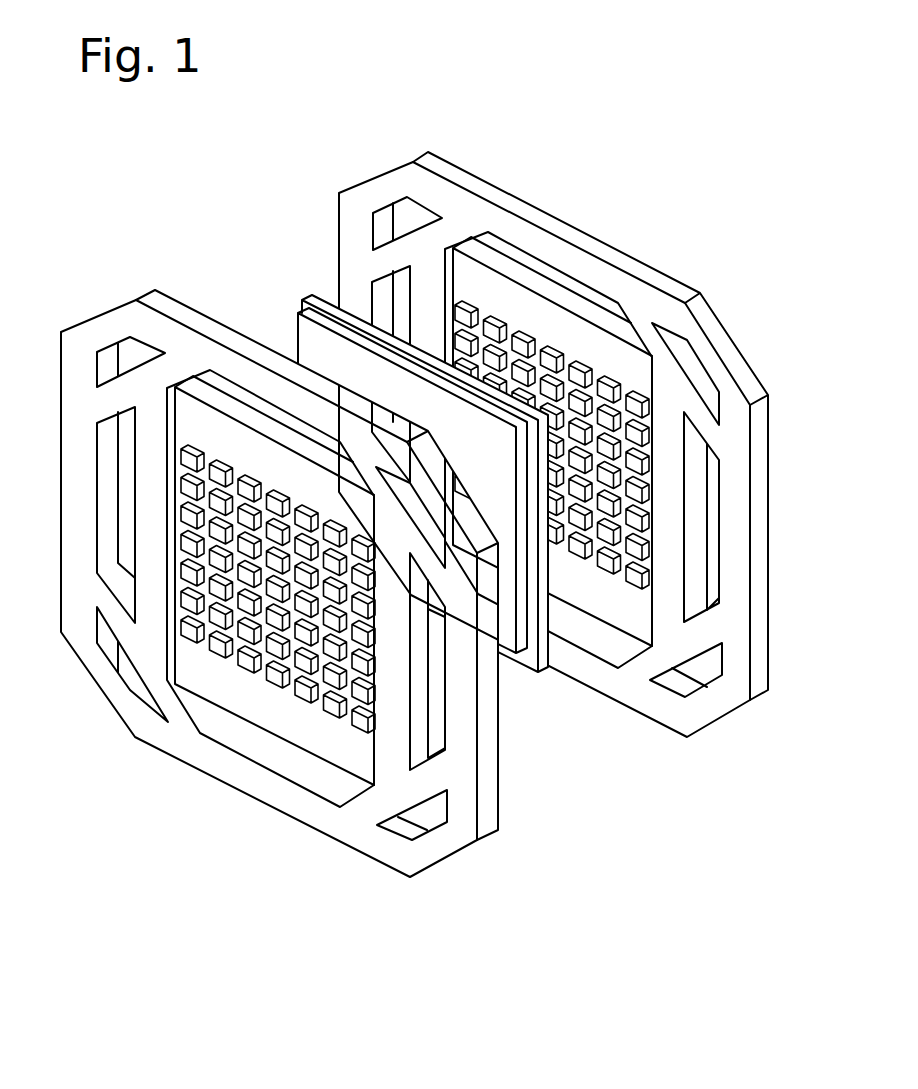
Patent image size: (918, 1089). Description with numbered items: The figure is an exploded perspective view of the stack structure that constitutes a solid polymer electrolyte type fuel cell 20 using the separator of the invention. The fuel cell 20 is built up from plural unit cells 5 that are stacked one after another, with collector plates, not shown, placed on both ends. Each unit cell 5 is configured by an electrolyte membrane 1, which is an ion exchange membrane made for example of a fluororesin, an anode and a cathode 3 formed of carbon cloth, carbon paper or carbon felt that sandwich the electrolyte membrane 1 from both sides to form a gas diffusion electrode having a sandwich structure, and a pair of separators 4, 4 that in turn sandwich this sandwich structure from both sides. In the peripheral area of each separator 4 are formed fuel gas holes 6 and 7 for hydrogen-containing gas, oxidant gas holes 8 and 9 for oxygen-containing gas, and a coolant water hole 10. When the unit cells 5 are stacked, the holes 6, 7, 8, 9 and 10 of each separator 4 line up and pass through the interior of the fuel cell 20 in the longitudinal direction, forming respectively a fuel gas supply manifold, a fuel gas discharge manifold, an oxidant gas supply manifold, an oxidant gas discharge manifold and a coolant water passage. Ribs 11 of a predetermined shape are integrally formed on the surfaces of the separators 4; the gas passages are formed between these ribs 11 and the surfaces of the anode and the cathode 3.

The electrolyte membrane 1 is at (533, 662).
The cathode 3 is at (298, 313).
The separator 4 is at (452, 845).
The unit cell 5 is at (282, 283).
The fuel gas hole 6 is at (555, 273).
The fuel gas hole 7 is at (235, 722).
The oxidant gas hole 8 is at (125, 522).
The oxidant gas hole 9 is at (712, 537).
The coolant water hole 10 is at (128, 347).
The ribs 11 is at (352, 735).
The solid polymer electrolyte type fuel cell 20 is at (62, 279).